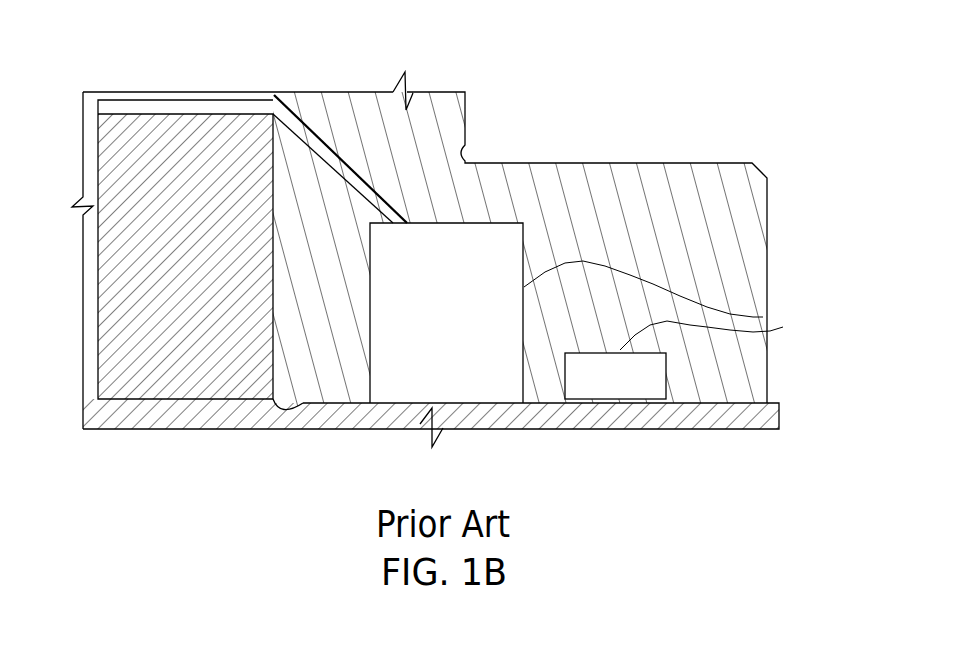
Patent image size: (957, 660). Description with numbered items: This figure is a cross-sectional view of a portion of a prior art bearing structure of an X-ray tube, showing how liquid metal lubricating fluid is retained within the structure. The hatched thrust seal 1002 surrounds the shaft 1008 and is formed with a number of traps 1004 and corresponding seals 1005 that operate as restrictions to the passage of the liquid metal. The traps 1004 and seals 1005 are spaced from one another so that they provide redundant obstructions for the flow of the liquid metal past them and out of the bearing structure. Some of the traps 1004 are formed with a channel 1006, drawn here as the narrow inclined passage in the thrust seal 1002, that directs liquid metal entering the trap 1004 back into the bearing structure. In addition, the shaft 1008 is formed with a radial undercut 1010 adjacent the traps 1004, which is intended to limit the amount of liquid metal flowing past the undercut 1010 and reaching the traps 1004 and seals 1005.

The thrust seal 1002 is at (544, 178).
The traps 1004 is at (763, 317).
The seals 1005 is at (333, 388).
The channels 1006 is at (338, 92).
The shaft 1008 is at (547, 430).
The radial undercuts 1010 is at (274, 420).